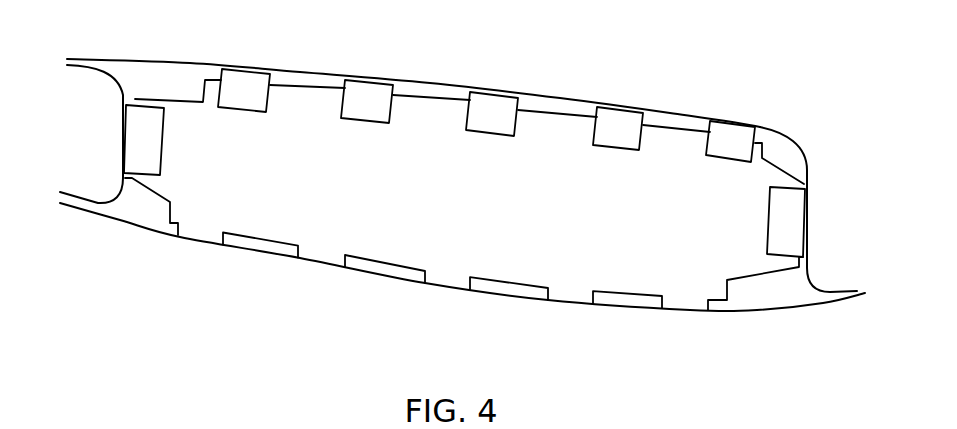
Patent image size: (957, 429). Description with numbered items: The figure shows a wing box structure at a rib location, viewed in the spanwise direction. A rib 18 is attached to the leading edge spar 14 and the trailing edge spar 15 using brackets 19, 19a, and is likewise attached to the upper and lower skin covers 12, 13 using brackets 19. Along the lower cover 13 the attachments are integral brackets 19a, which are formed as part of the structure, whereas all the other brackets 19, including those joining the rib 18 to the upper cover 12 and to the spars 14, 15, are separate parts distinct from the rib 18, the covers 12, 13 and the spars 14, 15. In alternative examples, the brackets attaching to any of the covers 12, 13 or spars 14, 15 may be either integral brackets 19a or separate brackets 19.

The upper skin cover 12 is at (438, 83).
The lower skin cover 13 is at (251, 257).
The leading edge spar 14 is at (812, 173).
The trailing edge spar 15 is at (118, 190).
The rib 18 is at (517, 255).
The bracket 19 is at (143, 133).
The integral bracket 19a is at (198, 228).